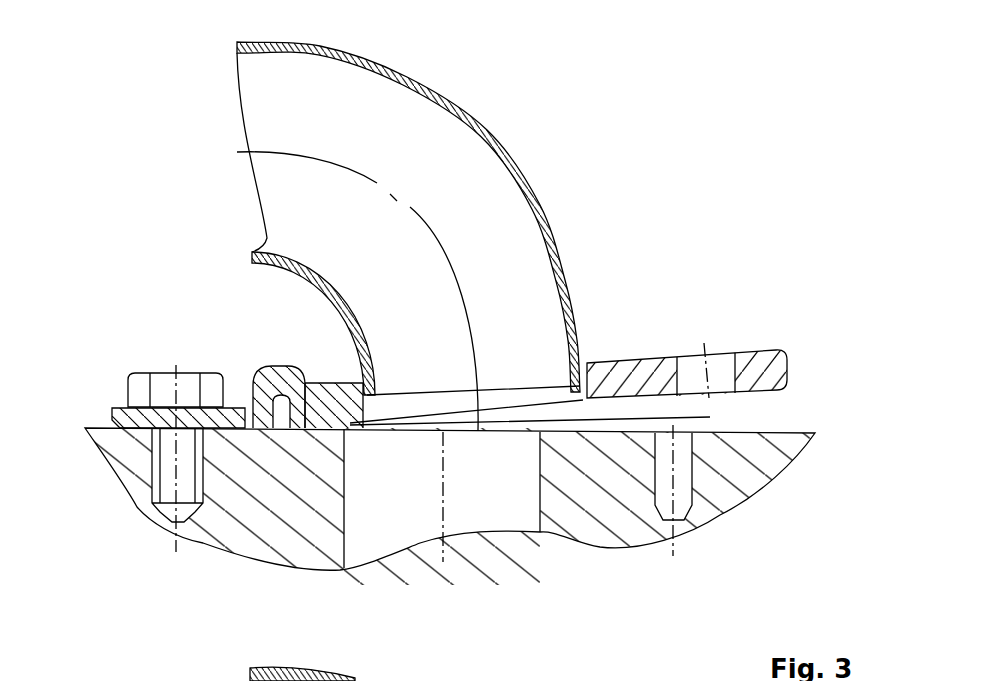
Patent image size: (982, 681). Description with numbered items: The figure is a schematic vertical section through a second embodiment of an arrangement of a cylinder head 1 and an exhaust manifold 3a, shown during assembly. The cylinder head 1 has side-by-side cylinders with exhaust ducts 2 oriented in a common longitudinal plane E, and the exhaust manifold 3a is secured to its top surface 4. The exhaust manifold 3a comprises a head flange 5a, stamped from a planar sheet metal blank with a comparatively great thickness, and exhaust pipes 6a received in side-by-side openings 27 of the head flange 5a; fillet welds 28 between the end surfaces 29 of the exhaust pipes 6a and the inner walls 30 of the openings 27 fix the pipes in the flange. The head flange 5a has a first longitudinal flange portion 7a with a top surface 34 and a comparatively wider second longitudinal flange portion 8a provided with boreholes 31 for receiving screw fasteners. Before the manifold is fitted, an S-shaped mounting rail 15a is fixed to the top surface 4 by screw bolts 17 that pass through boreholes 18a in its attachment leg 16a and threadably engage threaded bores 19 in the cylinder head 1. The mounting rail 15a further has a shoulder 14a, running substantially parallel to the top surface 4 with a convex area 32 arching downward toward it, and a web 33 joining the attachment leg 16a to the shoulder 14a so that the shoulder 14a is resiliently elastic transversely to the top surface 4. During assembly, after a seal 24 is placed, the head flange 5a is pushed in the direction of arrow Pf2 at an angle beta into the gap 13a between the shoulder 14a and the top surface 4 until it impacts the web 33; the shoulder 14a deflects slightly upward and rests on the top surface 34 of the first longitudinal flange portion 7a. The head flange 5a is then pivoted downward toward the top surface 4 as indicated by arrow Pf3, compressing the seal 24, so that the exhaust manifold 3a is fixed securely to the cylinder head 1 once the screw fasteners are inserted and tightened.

The cylinder head 1 is at (248, 522).
The exhaust ducts 2 is at (380, 510).
The exhaust manifold 3a is at (602, 222).
The top surface 4 is at (453, 430).
The head flange 5a is at (617, 357).
The exhaust pipes 6a is at (445, 97).
The first longitudinal flange portion 7a is at (338, 388).
The second longitudinal flange portion 8a is at (647, 373).
The gap 13a is at (203, 543).
The shoulder 14a is at (285, 373).
The mounting rail 15a is at (240, 400).
The attachment leg 16a is at (132, 415).
The screw bolts 17 is at (160, 373).
The boreholes 18a is at (160, 397).
The threaded bores 19 is at (170, 515).
The seal 24 is at (510, 400).
The openings 27 is at (548, 400).
The fillet welds 28 is at (372, 402).
The end surfaces 29 is at (582, 393).
The inner walls 30 is at (583, 395).
The boreholes 31 is at (598, 355).
The convex area 32 is at (290, 430).
The web 33 is at (260, 393).
The top surface 34 is at (352, 378).
The longitudinal plane E is at (459, 515).
The arrow Pf2 is at (868, 308).
The arrow Pf3 is at (745, 372).
The angle beta is at (840, 383).